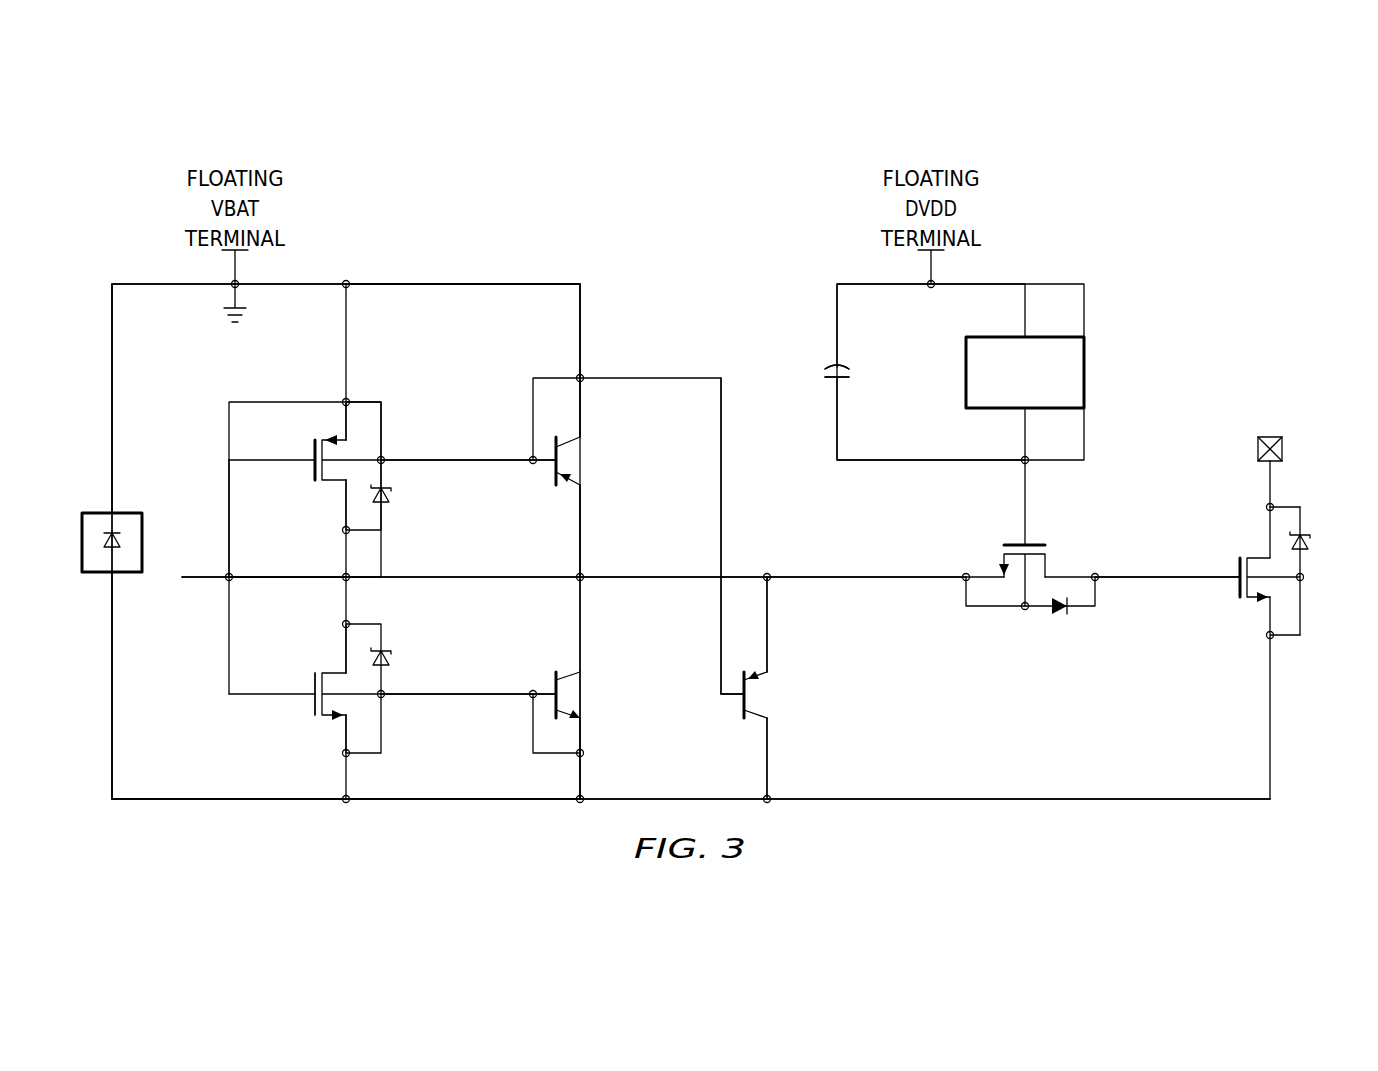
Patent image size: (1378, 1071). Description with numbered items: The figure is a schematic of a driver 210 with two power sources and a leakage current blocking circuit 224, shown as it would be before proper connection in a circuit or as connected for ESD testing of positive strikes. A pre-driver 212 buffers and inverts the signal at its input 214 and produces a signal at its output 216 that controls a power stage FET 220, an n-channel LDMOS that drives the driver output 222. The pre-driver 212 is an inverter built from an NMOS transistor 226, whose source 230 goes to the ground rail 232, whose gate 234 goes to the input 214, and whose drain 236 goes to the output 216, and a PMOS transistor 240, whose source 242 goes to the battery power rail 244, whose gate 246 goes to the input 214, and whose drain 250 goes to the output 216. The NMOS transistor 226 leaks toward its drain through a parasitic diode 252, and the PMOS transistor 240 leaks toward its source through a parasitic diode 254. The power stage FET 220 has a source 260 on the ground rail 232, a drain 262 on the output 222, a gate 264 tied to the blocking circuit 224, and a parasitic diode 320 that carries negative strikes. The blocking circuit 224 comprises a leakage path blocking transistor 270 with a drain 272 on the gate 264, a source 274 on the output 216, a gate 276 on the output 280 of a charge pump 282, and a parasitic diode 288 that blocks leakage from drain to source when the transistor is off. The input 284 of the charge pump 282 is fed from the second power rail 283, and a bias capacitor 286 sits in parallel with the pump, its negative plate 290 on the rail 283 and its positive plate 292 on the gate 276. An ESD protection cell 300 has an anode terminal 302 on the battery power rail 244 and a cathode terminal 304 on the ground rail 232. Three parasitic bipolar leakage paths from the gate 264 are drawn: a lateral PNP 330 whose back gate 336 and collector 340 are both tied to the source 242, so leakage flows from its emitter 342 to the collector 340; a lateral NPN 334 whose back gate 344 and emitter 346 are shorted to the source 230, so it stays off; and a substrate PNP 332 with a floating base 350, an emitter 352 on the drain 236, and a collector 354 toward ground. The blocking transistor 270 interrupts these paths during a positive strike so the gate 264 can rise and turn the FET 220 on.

The driver 210 is at (118, 200).
The pre-driver 212 is at (305, 374).
The input 214 is at (212, 582).
The output 216 is at (528, 577).
The power stage FET 220 is at (1232, 564).
The output 222 is at (1272, 434).
The leakage current blocking circuit 224 is at (1050, 226).
The NMOS transistor 226 is at (310, 686).
The source 230 is at (342, 738).
The ground rail 232 is at (232, 803).
The gate 234 is at (300, 696).
The drain 236 is at (342, 656).
The PMOS transistor 240 is at (310, 480).
The source 242 is at (342, 432).
The battery power rail 244 is at (393, 284).
The gate 246 is at (300, 460).
The drain 250 is at (342, 508).
The parasitic diode 252 is at (396, 657).
The parasitic diode 254 is at (396, 494).
The source 260 is at (1266, 620).
The drain 262 is at (1266, 540).
The gate 264 is at (1226, 580).
The leakage path blocking transistor 270 is at (1035, 544).
The drain 272 is at (1110, 576).
The source 274 is at (985, 576).
The gate 276 is at (1021, 486).
The output 280 is at (1027, 435).
The charge pump 282 is at (1088, 376).
The second power rail 283 is at (852, 284).
The input 284 is at (1027, 312).
The bias capacitor 286 is at (925, 412).
The parasitic diode 288 is at (1062, 616).
The negative plate 290 is at (828, 366).
The positive plate 292 is at (828, 384).
The ESD protection cell 300 is at (125, 512).
The anode terminal 302 is at (108, 510).
The cathode terminal 304 is at (108, 578).
The parasitic diode 320 is at (1312, 540).
The lateral PNP BJT 330 is at (550, 476).
The substrate PNP BJT 332 is at (738, 706).
The lateral NPN BJT 334 is at (550, 686).
The back gate 336 is at (518, 459).
The collector 340 is at (582, 425).
The emitter 342 is at (583, 497).
The back gate 344 is at (518, 698).
The emitter 346 is at (583, 732).
The base 350 is at (716, 684).
The emitter 352 is at (771, 667).
The collector 354 is at (771, 731).